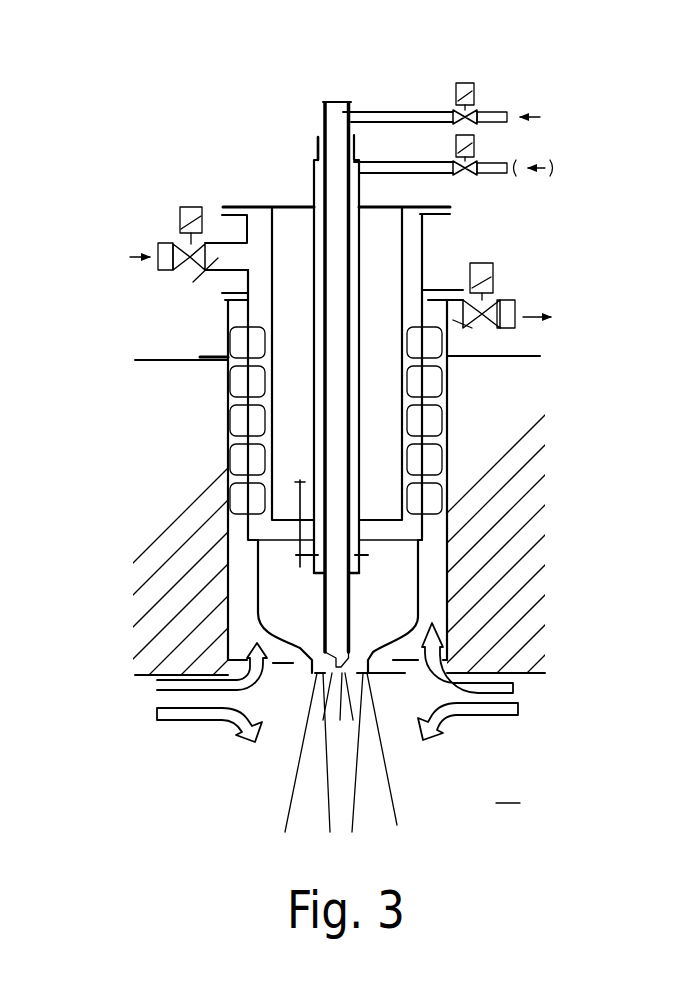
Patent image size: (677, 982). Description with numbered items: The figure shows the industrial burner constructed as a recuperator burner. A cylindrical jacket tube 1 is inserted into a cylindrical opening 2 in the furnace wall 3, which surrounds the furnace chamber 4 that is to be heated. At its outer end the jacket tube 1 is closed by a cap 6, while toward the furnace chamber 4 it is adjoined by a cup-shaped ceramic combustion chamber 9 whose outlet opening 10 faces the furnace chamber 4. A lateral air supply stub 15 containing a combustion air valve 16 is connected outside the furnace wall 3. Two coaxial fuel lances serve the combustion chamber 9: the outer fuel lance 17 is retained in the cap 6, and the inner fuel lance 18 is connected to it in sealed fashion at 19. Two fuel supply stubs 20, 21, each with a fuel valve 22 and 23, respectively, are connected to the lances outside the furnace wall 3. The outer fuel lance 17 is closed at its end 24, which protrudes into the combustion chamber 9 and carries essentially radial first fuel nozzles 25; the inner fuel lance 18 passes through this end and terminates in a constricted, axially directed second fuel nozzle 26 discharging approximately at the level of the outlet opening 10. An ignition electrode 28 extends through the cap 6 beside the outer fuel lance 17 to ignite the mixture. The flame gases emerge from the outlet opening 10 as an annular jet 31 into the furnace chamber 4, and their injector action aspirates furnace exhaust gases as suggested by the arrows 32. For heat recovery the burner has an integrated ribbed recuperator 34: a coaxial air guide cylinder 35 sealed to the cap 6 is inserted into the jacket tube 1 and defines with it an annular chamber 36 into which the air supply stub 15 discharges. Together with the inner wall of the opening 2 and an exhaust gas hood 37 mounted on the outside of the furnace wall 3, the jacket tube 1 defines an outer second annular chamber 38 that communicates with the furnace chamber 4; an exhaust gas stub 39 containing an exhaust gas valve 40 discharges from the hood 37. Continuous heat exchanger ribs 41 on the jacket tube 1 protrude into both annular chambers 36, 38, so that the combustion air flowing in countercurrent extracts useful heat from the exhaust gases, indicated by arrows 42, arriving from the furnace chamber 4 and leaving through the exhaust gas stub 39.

The jacket tube 1 is at (425, 267).
The opening 2 is at (408, 648).
The furnace wall 3 is at (517, 503).
The furnace chamber 4 is at (508, 792).
The cap 6 is at (447, 200).
The combustion chamber 9 is at (273, 627).
The outlet opening 10 is at (317, 680).
The air supply stub 15 is at (205, 272).
The combustion air valve 16 is at (180, 233).
The outer fuel lance 17 is at (362, 398).
The inner fuel lance 18 is at (342, 339).
The connection of inner fuel lance to outer fuel lance 19 is at (317, 142).
The fuel supply stub 20 is at (405, 160).
The fuel supply stub 21 is at (387, 118).
The first fuel valve 22 is at (477, 160).
The second fuel valve 23 is at (477, 107).
The end of outer fuel lance 24 is at (355, 575).
The first fuel nozzles 25 is at (368, 557).
The second fuel nozzle 26 is at (330, 673).
The ignition electrode 28 is at (300, 498).
The annular jet 31 is at (300, 805).
The arrows indicating aspirated exhaust gases 32 is at (490, 738).
The ribbed recuperator 34 is at (216, 440).
The air guide cylinder 35 is at (272, 227).
The annular chamber 36 is at (262, 317).
The exhaust gas hood 37 is at (218, 333).
The outer second annular chamber 38 is at (232, 528).
The exhaust gas stub 39 is at (472, 327).
The exhaust gas valve 40 is at (485, 303).
The heat exchanger ribs 41 is at (445, 432).
The arrows indicating exhaust gases 42 is at (450, 647).